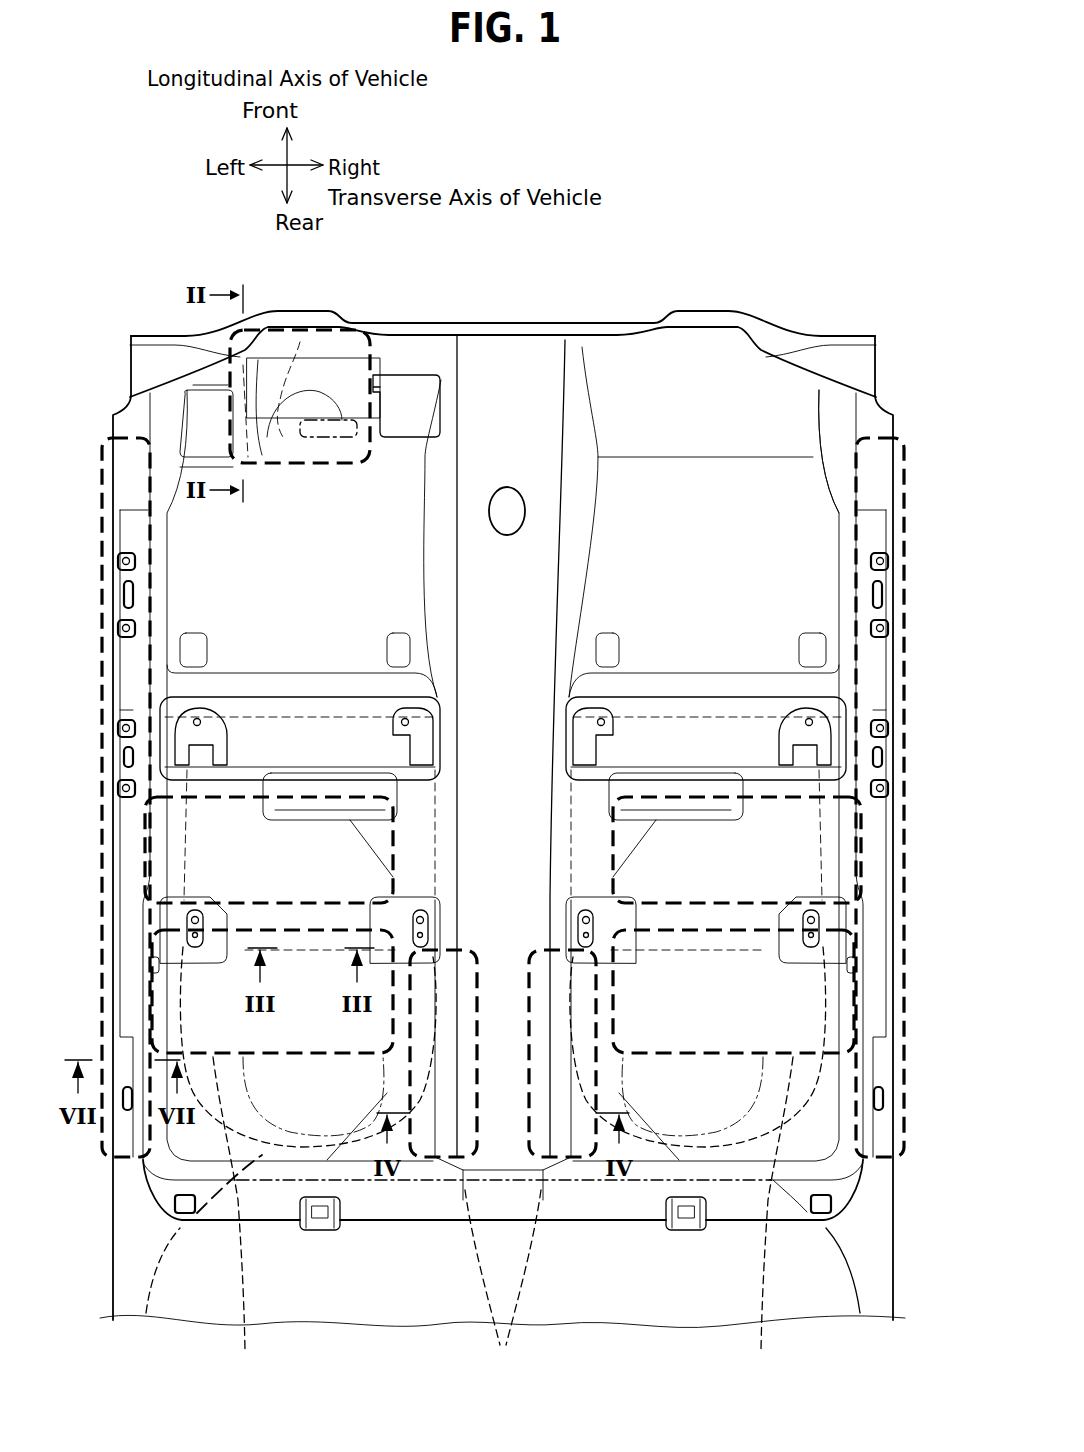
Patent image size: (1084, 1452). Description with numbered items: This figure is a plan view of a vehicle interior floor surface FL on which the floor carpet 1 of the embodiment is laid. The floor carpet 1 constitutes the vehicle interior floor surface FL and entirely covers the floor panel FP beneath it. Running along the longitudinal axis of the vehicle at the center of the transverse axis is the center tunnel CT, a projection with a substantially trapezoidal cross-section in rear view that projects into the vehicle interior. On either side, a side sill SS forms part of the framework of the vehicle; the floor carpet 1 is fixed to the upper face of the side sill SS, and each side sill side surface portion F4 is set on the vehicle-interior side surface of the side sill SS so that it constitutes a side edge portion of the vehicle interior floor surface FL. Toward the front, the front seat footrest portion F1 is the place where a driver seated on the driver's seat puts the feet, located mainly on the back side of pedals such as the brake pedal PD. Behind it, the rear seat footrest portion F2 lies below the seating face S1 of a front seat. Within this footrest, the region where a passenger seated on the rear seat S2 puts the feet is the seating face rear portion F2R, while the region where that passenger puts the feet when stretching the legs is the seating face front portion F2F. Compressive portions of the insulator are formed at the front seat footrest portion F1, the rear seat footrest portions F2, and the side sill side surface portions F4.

The floor carpet 1 is at (683, 388).
The vehicle interior floor surface FL is at (790, 273).
The center tunnel CT is at (510, 388).
The floor panel FP is at (840, 362).
The side sill SS is at (130, 417).
The side sill side surface portion F4 is at (112, 488).
The front seat footrest portion F1 is at (300, 463).
The brake pedal PD is at (348, 440).
The seating face of front seat S1 is at (343, 717).
The seating face front portion F2F is at (233, 797).
The rear seat footrest portion F2 is at (503, 1045).
The seating face rear portion F2R is at (503, 1140).
The rear seat S2 is at (172, 1232).